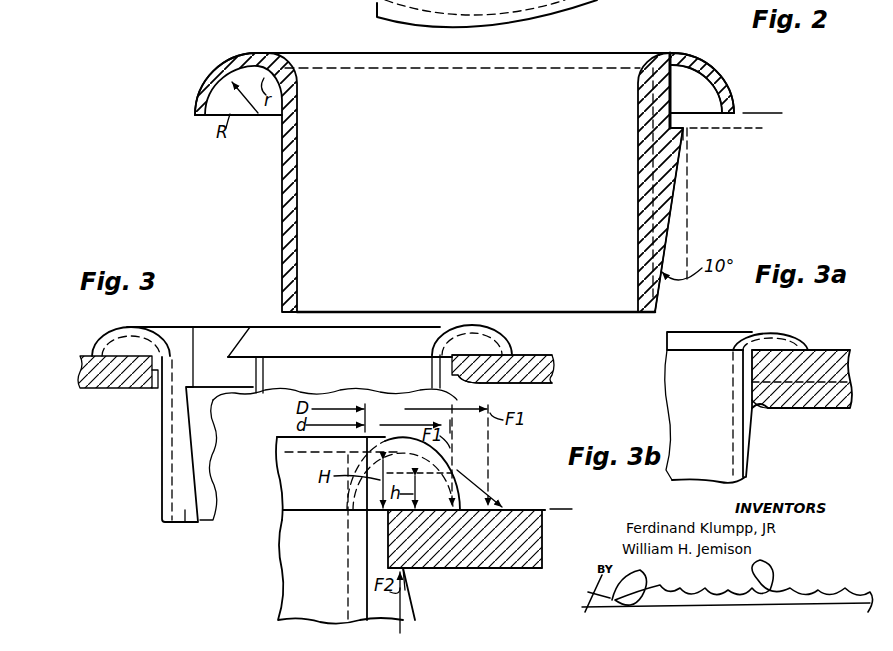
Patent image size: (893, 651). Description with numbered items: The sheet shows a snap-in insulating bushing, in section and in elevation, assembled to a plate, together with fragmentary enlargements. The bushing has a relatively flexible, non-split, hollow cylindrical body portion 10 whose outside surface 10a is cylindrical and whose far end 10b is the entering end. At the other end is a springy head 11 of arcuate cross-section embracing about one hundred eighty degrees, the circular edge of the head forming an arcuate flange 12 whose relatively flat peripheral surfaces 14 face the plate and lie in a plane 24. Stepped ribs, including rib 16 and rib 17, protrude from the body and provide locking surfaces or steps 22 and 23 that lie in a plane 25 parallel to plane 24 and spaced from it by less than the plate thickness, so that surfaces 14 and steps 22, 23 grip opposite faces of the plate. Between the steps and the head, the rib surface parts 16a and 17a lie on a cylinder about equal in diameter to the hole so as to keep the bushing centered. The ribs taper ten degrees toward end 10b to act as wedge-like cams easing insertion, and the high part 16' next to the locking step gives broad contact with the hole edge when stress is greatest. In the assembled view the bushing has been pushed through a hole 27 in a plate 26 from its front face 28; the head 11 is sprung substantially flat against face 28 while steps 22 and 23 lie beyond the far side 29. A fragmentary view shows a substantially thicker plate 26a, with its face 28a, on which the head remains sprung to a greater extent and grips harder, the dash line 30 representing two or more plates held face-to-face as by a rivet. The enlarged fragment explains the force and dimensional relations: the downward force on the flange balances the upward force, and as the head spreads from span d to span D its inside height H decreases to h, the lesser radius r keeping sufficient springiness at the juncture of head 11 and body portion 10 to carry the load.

In FIG. 2, the body portion 10 is at (464, 198).
In FIG. 3, the body portion 10 is at (155, 461).
In FIG. 3b, the body portion 10 is at (316, 538).
In FIG. 3a, the body portion 10 is at (700, 482).
In FIG. 2, the outside surface of body portion 10a is at (282, 243).
In FIG. 3, the outside surface of body portion 10a is at (162, 432).
In FIG. 3b, the outside surface of body portion 10a is at (368, 605).
In FIG. 2, the end of body portion 10b is at (614, 314).
In FIG. 2, the head 11 is at (583, 53).
In FIG. 3, the head 11 is at (278, 327).
In FIG. 3b, the head 11 is at (280, 437).
In FIG. 3a, the head 11 is at (690, 332).
In FIG. 2, the arcuate flange 12 is at (210, 96).
In FIG. 3, the arcuate flange 12 is at (120, 337).
In FIG. 3b, the arcuate flange 12 is at (457, 470).
In FIG. 3a, the arcuate flange 12 is at (782, 340).
In FIG. 2, the peripheral surfaces 14 is at (200, 115).
In FIG. 3, the peripheral surfaces 14 is at (343, 357).
In FIG. 3b, the peripheral surfaces 14 is at (277, 520).
In FIG. 3a, the peripheral surfaces 14 is at (686, 352).
In FIG. 2, the rib 16 is at (696, 220).
In FIG. 3b, the rib 16 is at (439, 594).
In FIG. 3a, the rib 16 is at (775, 443).
In FIG. 3b, the high part of cam surface 16' is at (445, 580).
In FIG. 2, the surface part of rib 16a is at (670, 92).
In FIG. 3, the rib 17 is at (267, 390).
In FIG. 3, the surface part of rib 17a is at (182, 340).
In FIG. 2, the locking surface or step 22 is at (688, 120).
In FIG. 3, the locking surface or step 22 is at (478, 385).
In FIG. 3a, the locking surface or step 22 is at (764, 410).
In FIG. 3, the locking surface or step 23 is at (228, 405).
In FIG. 2, the plane of plate-engaging surfaces 14 24 is at (762, 113).
In FIG. 2, the plane of locking surfaces 25 is at (765, 128).
In FIG. 3, the plate 26 is at (97, 388).
In FIG. 3b, the plate 26 is at (545, 538).
In FIG. 3a, the plate 26a is at (840, 408).
In FIG. 3, the hole 27 is at (155, 388).
In FIG. 3, the front face of plate 28 is at (532, 355).
In FIG. 3b, the front face of plate 28 is at (528, 510).
In FIG. 3a, the front face of thicker plate 28a is at (822, 350).
In FIG. 3, the far side of plate 29 is at (522, 385).
In FIG. 3b, the far side of plate 29 is at (508, 570).
In FIG. 3a, the dash line 30 is at (800, 408).